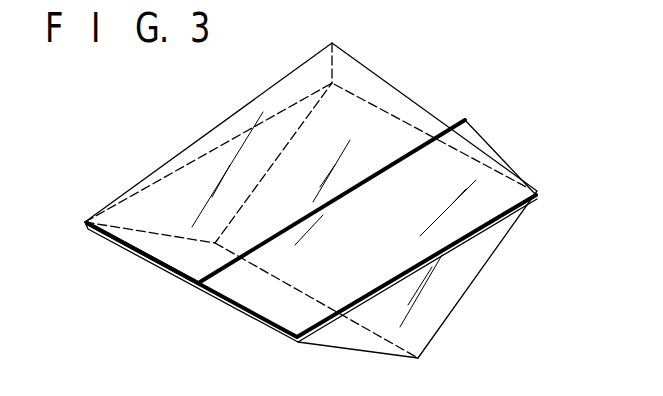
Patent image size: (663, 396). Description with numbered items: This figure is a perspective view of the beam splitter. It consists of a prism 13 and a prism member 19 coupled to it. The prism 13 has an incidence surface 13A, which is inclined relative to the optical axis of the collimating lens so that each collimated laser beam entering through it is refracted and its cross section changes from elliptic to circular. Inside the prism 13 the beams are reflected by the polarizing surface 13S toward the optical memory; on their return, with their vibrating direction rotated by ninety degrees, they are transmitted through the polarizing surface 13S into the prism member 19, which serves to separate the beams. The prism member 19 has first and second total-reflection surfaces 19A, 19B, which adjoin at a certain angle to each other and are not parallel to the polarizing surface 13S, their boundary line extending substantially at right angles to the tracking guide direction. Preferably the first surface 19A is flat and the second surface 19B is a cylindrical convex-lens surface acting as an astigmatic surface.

The prism 13 is at (462, 285).
The incidence surface 13A is at (342, 352).
The polarizing surface 13S is at (227, 307).
The prism member 19 is at (413, 95).
The first total-reflection surface 19A is at (148, 242).
The second total-reflection surface 19B is at (490, 152).